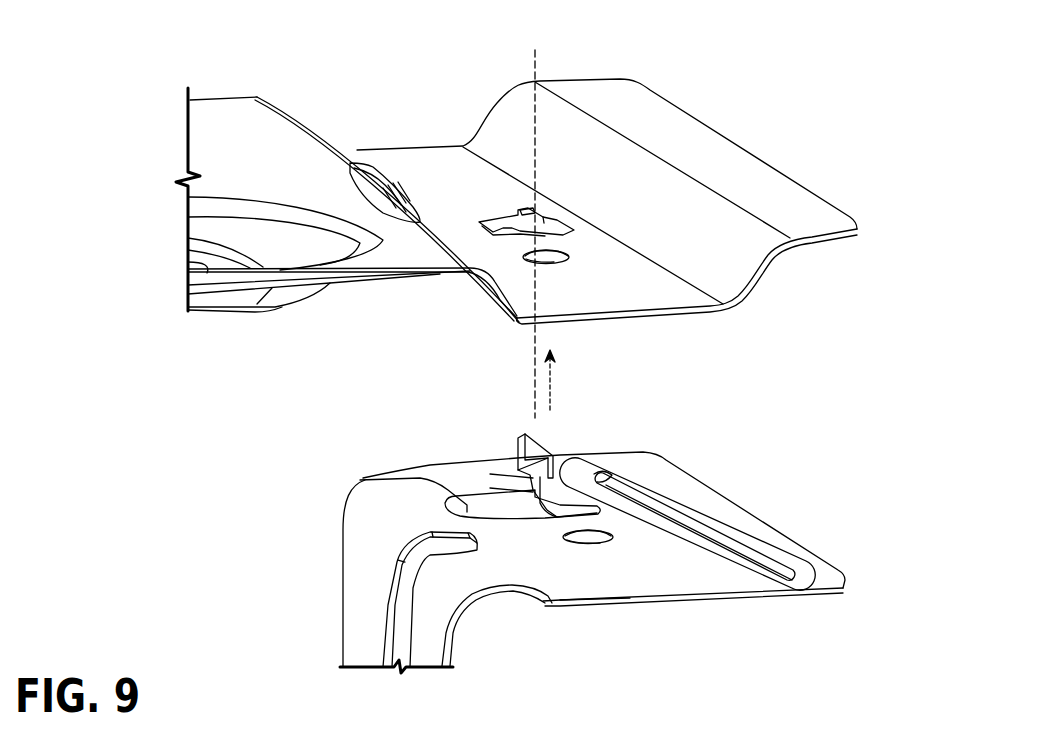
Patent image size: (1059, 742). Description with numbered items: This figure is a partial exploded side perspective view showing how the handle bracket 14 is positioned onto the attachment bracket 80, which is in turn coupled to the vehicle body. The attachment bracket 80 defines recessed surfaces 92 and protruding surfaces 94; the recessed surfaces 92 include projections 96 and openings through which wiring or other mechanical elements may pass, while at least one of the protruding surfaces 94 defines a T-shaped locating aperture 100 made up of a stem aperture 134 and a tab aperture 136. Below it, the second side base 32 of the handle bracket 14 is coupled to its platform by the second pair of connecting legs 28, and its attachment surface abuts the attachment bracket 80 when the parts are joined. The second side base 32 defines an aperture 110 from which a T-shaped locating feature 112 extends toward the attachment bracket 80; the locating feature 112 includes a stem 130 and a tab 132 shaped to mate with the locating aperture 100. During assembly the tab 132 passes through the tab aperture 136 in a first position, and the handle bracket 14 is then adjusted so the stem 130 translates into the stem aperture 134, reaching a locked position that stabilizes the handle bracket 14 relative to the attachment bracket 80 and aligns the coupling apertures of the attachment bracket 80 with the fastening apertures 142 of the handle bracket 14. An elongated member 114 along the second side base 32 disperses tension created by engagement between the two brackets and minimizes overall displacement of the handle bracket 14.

The handle bracket 14 is at (840, 573).
The second pair of connecting legs 28 is at (430, 610).
The second side base 32 is at (653, 563).
The attachment bracket 80 is at (742, 148).
The recessed surfaces 92 is at (420, 272).
The protruding surfaces 94 is at (697, 312).
The projections 96 is at (237, 296).
The locating aperture 100 is at (540, 216).
The aperture 110 is at (355, 478).
The locating feature 112 is at (565, 499).
The elongated members 114 is at (727, 548).
The stem 130 is at (532, 487).
The tab 132 is at (548, 436).
The stem aperture 134 is at (493, 222).
The tab aperture 136 is at (547, 218).
The fastening apertures 142 is at (593, 541).